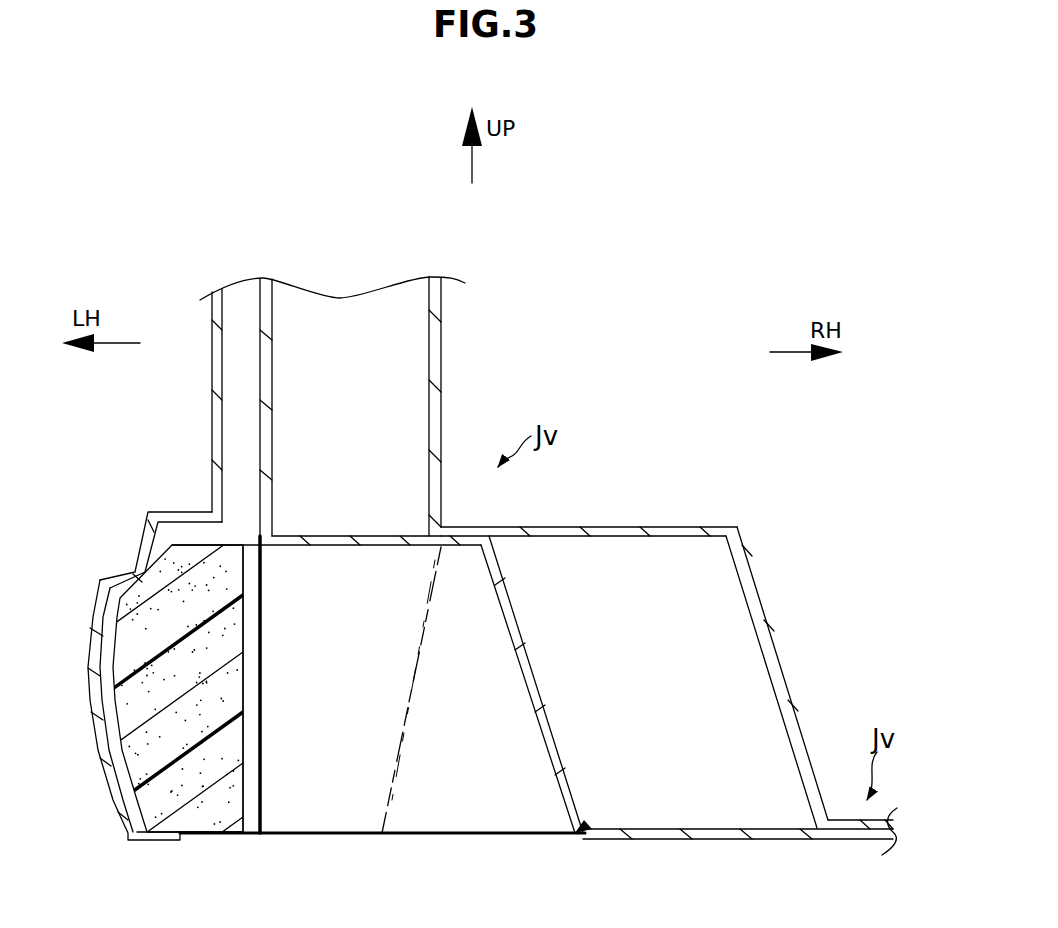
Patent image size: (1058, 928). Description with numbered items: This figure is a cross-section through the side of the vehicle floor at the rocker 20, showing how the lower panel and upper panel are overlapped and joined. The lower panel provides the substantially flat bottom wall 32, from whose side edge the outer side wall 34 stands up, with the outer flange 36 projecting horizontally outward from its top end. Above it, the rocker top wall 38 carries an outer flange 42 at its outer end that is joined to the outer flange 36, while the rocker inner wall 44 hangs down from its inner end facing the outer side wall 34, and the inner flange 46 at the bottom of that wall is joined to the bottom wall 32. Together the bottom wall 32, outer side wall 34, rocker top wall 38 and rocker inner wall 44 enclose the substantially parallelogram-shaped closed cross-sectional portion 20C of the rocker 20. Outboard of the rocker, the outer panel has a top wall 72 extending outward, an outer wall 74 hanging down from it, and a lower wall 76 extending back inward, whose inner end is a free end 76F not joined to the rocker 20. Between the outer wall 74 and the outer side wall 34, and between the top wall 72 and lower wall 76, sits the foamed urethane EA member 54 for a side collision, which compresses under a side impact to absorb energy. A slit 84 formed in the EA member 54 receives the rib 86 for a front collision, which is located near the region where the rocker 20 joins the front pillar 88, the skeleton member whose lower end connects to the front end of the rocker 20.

The rocker 20 is at (669, 682).
The closed cross-sectional portion 20C is at (705, 747).
The bottom wall 32 is at (688, 845).
The outer side wall 34 is at (557, 748).
The outer flange 36 is at (447, 548).
The rocker top wall 38 is at (607, 537).
The outer flange 42 is at (460, 528).
The rocker inner wall 44 is at (780, 670).
The inner flange 46 is at (843, 820).
The EA member for a side collision 54 is at (212, 810).
The top wall 72 is at (160, 512).
The outer wall 74 is at (112, 800).
The lower wall 76 is at (177, 833).
The free end 76F is at (185, 834).
The slit 84 is at (258, 742).
The rib for a front collision 86 is at (521, 813).
The front pillar 88 is at (459, 402).